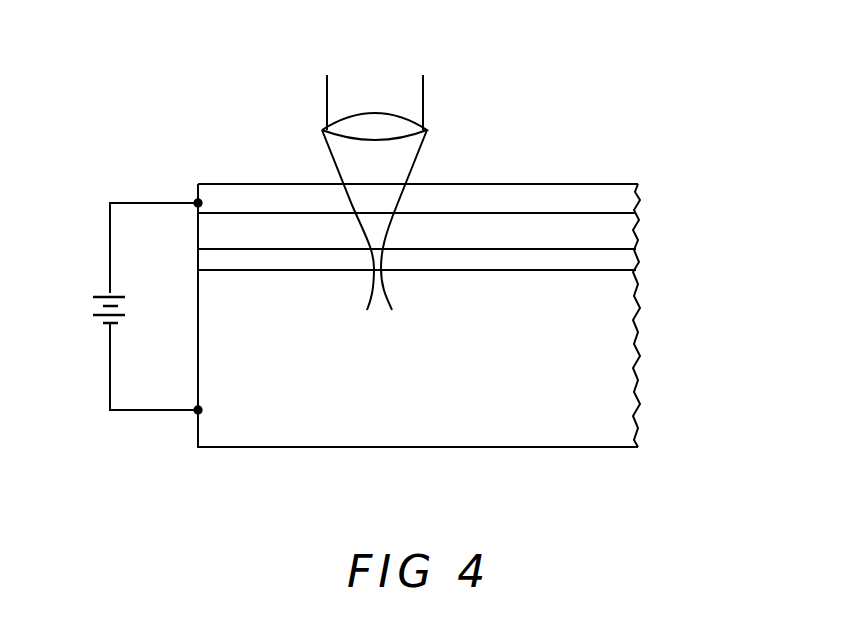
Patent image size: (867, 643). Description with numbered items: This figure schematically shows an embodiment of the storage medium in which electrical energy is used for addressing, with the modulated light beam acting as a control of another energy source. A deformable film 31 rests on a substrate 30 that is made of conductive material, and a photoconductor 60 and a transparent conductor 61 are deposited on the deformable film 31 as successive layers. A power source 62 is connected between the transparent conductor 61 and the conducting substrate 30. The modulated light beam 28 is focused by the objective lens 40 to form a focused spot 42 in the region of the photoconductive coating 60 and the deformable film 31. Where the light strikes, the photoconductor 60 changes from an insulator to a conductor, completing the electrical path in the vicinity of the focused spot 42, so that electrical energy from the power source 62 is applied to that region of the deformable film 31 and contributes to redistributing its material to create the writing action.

The modulated light beam 28 is at (424, 91).
The objective lens 40 is at (350, 133).
The focused spot 42 is at (387, 283).
The transparent conductor 61 is at (642, 190).
The photoconductor 60 is at (642, 225).
The deformable film 31 is at (642, 255).
The substrate 30 is at (590, 377).
The power source 62 is at (123, 306).